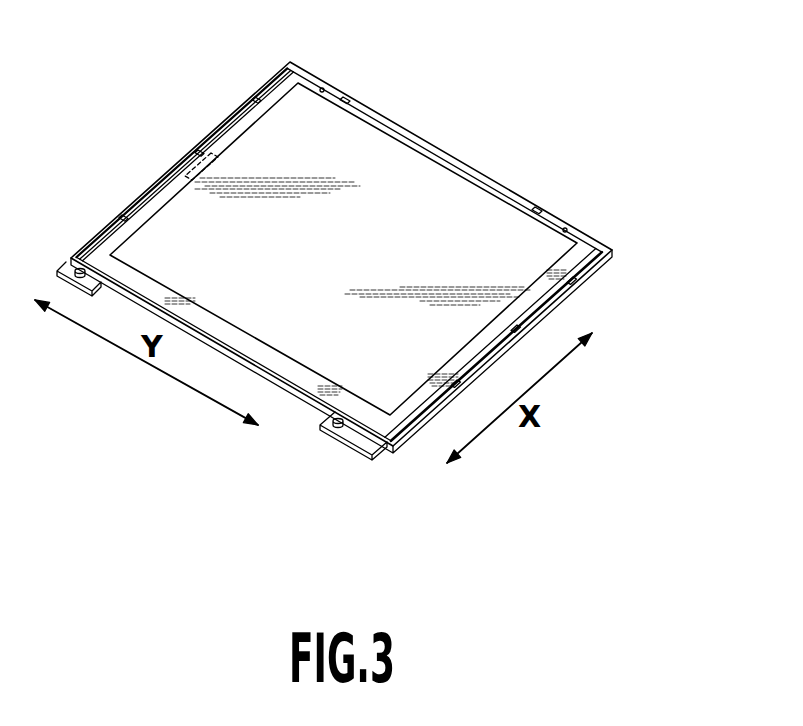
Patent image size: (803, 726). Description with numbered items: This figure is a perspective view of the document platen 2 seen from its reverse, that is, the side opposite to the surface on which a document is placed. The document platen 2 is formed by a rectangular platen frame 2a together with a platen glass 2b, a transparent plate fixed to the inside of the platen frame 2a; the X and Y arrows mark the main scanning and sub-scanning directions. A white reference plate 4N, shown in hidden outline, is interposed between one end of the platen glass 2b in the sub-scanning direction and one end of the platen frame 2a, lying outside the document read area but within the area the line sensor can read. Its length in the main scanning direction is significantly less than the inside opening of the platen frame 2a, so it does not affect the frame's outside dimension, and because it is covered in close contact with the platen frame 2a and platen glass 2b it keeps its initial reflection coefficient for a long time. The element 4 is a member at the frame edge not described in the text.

The document platen 2 is at (570, 84).
The platen frame 2a is at (504, 193).
The platen glass 2b is at (380, 172).
The holding member 4 is at (355, 431).
The white reference plate 4N is at (190, 160).